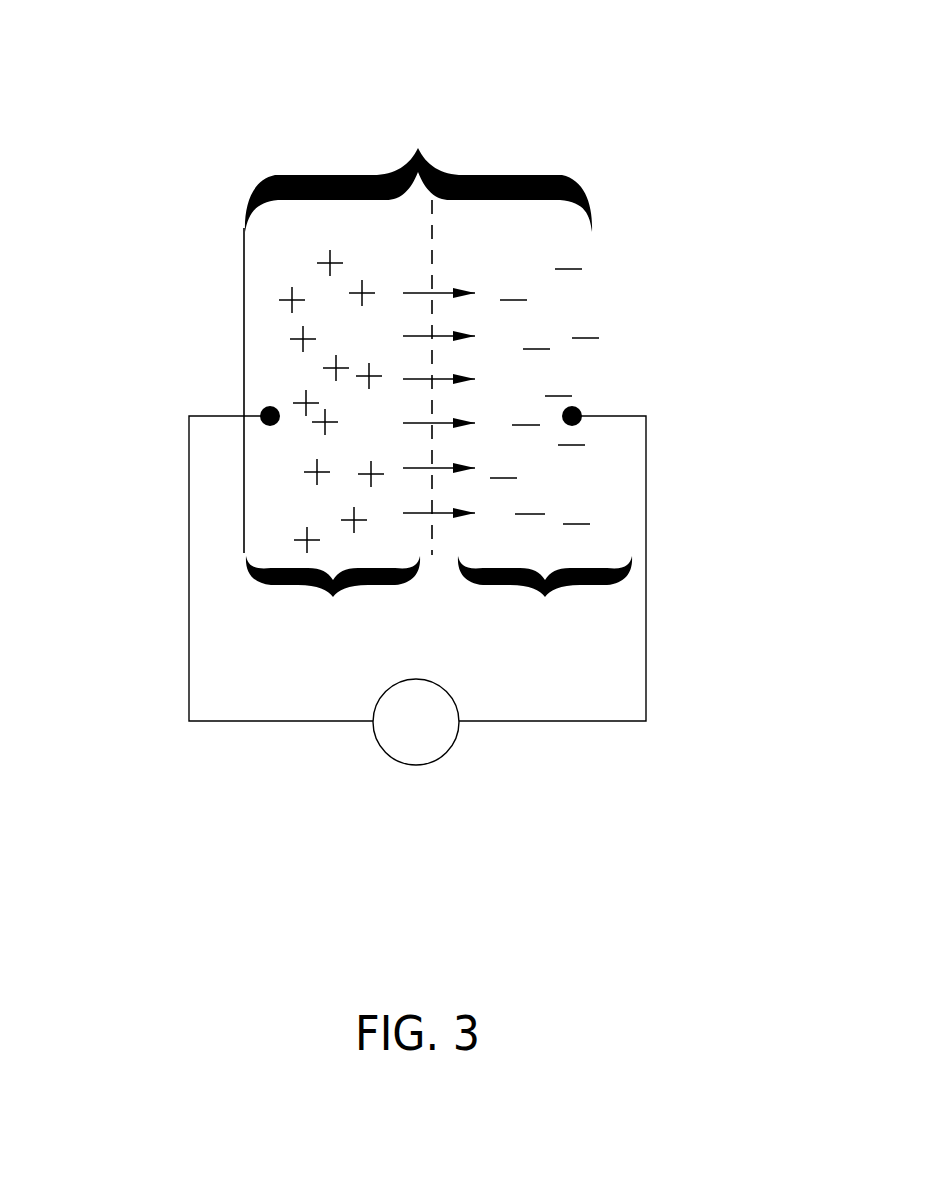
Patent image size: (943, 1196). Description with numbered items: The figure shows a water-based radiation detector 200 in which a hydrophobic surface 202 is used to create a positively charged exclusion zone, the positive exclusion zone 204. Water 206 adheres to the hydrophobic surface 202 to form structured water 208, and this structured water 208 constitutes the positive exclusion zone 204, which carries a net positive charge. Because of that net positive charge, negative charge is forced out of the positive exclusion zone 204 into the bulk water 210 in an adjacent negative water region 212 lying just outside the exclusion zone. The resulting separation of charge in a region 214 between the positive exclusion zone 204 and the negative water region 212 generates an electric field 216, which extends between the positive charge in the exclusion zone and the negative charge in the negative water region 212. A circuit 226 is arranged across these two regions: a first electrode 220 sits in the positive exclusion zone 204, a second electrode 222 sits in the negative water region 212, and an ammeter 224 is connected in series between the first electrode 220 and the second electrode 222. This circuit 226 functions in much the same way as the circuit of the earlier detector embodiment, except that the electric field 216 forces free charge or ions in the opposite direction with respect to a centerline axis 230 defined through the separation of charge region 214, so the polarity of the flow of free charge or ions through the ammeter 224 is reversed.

The water-based radiation detector 200 is at (596, 114).
The hydrophobic surface 202 is at (244, 298).
The positive exclusion zone 204 is at (258, 510).
The water 206 is at (418, 171).
The structured water 208 is at (333, 594).
The bulk water 210 is at (545, 594).
The negative water region 212 is at (575, 318).
The separation of charge region 214 is at (445, 548).
The electric field 216 is at (440, 292).
The first electrode 220 is at (265, 408).
The second electrode 222 is at (577, 408).
The ammeter 224 is at (452, 744).
The circuit 226 is at (660, 607).
The centerline axis 230 is at (432, 237).